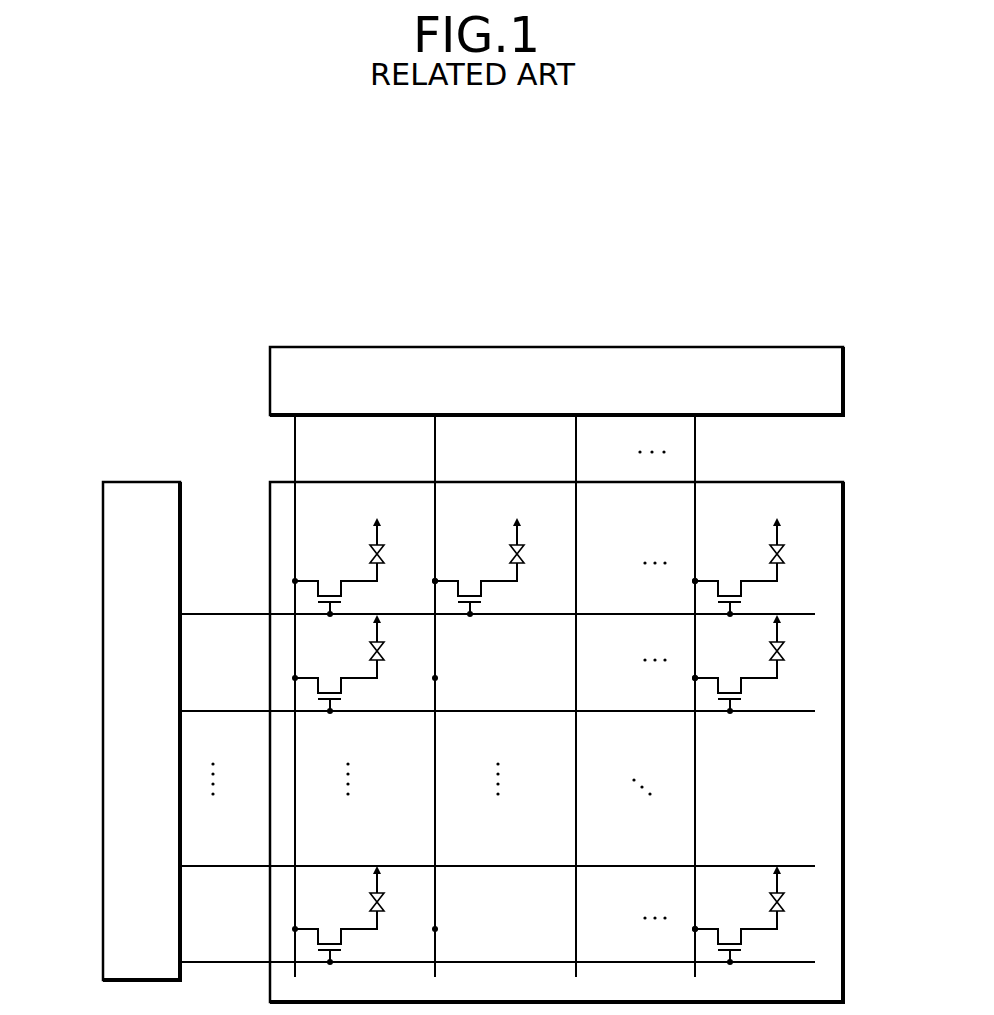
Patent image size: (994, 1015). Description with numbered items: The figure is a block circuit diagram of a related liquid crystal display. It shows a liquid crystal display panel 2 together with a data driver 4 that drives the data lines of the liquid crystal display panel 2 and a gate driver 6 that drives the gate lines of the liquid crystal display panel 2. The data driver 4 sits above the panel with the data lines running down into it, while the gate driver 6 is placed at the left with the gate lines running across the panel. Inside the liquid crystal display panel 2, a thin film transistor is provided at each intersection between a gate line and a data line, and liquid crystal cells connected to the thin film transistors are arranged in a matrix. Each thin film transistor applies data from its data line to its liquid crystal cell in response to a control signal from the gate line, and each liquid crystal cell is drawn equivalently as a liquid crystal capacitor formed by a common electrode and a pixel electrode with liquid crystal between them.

The liquid crystal display panel 2 is at (843, 775).
The data driver 4 is at (566, 347).
The gate driver 6 is at (103, 821).